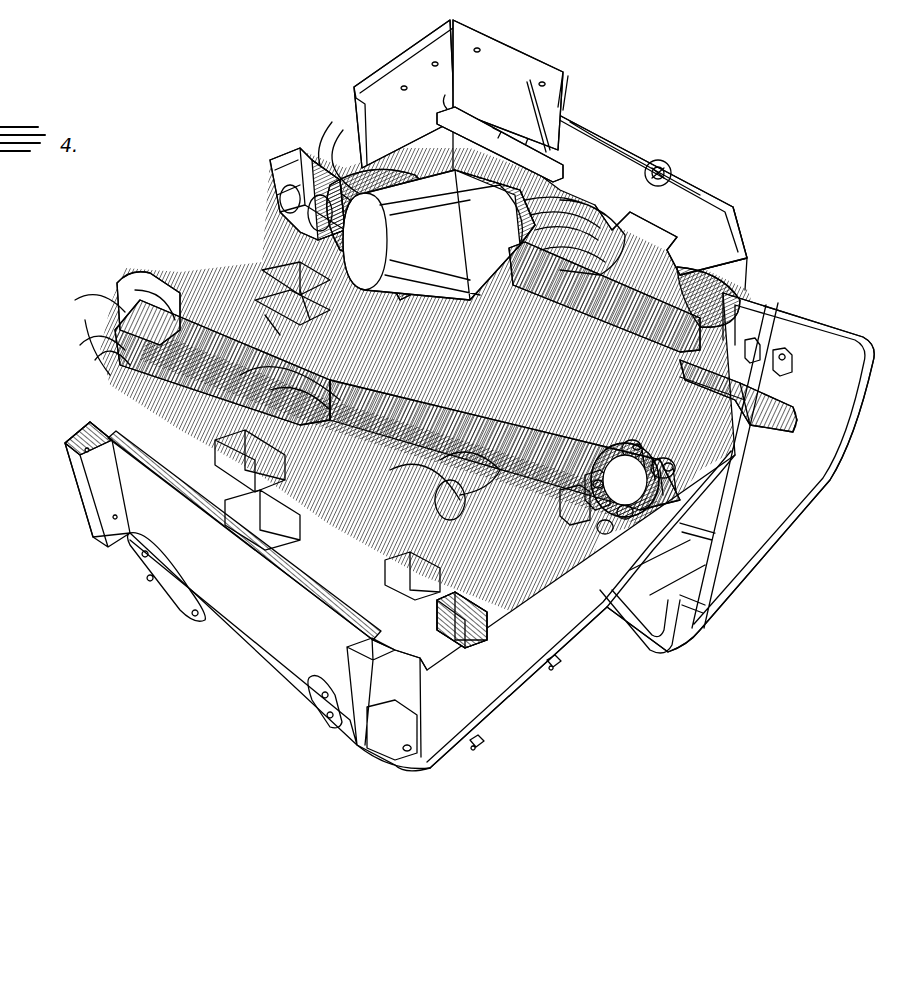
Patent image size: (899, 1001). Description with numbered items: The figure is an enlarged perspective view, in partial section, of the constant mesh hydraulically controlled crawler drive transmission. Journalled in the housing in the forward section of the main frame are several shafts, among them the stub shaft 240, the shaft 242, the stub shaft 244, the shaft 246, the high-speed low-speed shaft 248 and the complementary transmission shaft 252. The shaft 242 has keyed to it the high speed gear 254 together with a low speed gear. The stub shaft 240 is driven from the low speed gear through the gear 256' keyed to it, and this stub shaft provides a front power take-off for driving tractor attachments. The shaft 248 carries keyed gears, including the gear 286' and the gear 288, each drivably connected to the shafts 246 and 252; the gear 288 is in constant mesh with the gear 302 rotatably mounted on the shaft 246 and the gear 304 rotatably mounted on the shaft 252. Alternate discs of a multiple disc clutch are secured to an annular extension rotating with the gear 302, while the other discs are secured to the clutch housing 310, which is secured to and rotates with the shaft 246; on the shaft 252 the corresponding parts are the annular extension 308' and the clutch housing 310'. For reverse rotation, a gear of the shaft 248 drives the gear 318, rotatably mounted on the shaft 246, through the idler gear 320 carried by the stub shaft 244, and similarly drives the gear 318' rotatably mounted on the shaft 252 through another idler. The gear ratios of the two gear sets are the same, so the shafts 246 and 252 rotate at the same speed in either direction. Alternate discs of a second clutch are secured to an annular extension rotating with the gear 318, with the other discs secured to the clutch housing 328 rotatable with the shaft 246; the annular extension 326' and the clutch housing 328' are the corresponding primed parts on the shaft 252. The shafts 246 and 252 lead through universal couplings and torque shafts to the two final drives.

The stub shaft 240 is at (747, 270).
The shaft 242 is at (290, 237).
The stub shaft 244 is at (333, 148).
The shaft 246 is at (677, 227).
The high-speed low-speed shaft 248 is at (300, 280).
The complementary transmission shaft 252 is at (143, 390).
The high speed gear 254 is at (300, 215).
The gear 256' is at (670, 169).
The gear 286' is at (272, 295).
The gear 288 is at (560, 500).
The gear 302 is at (743, 282).
The gear 304 is at (430, 620).
The annular extension 308' is at (395, 582).
The clutch housing 310 is at (576, 213).
The clutch housing 310' is at (469, 532).
The gear 318 is at (502, 101).
The gear 318' is at (181, 377).
The idler gear 320 is at (425, 160).
The annular extension 326' is at (210, 478).
The clutch housing 328 is at (498, 193).
The clutch housing 328' is at (240, 530).